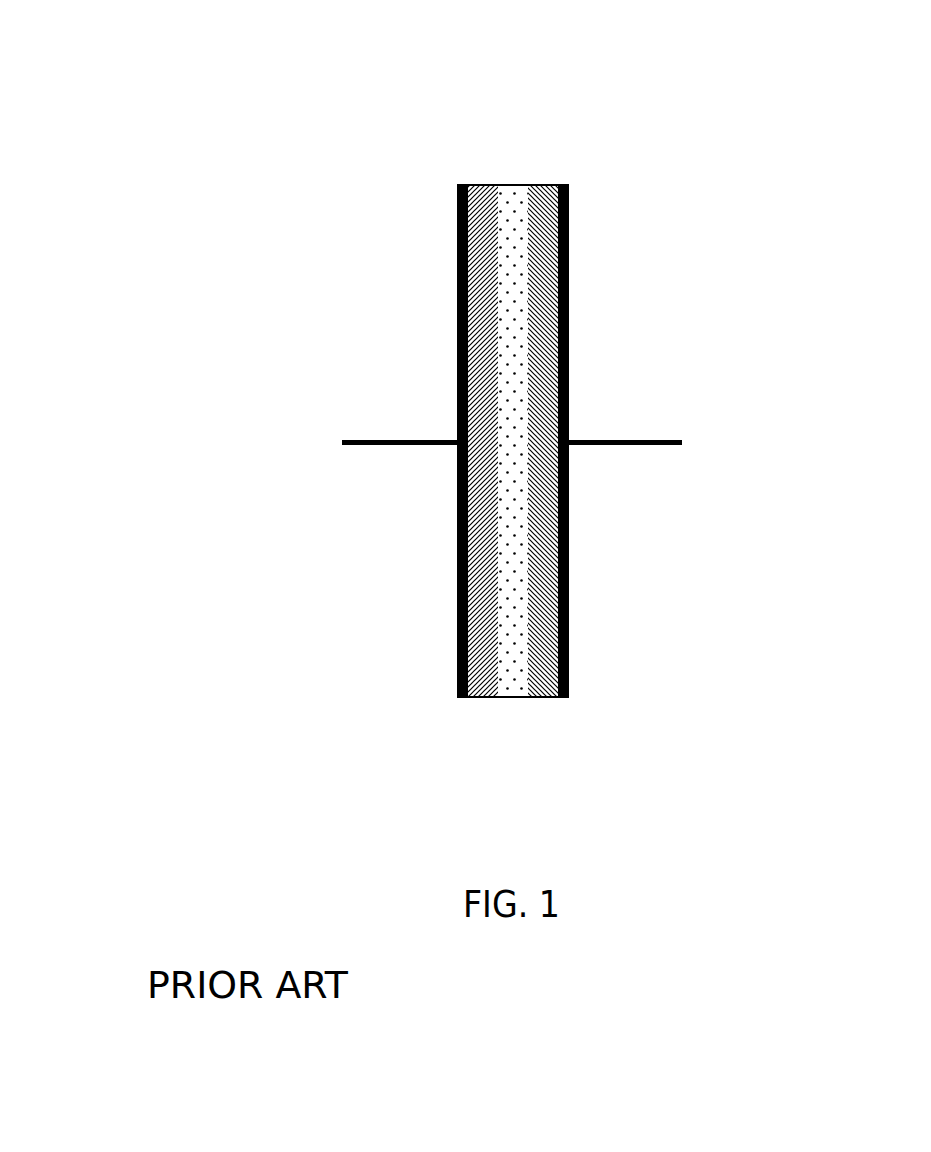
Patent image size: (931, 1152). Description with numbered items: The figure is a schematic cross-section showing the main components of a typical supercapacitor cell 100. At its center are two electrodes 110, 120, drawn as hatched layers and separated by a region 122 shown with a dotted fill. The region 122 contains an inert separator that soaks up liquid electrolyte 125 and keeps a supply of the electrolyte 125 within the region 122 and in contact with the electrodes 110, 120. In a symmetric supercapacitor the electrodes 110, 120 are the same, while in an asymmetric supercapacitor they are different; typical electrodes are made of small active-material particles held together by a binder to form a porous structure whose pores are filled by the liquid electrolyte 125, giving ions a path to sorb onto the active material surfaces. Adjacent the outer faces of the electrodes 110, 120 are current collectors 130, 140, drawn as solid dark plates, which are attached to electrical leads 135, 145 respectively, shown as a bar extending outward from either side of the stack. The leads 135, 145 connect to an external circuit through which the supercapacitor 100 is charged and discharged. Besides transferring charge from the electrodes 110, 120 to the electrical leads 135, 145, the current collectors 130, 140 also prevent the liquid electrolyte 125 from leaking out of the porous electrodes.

The supercapacitor cell 100 is at (236, 122).
The electrode 110 is at (478, 190).
The electrode 120 is at (547, 190).
The region 122 is at (506, 168).
The liquid electrolyte 125 is at (514, 670).
The current collector 130 is at (458, 327).
The current collector 140 is at (568, 363).
The electrical lead 135 is at (382, 444).
The electrical lead 145 is at (655, 444).